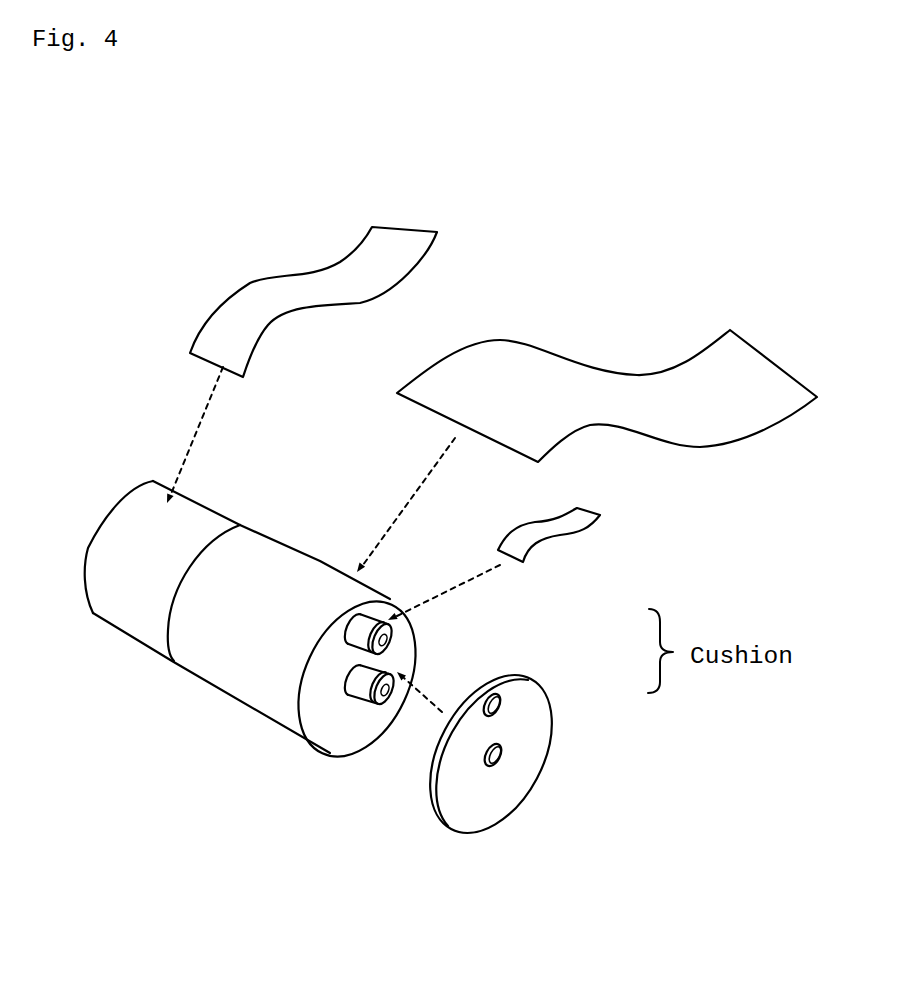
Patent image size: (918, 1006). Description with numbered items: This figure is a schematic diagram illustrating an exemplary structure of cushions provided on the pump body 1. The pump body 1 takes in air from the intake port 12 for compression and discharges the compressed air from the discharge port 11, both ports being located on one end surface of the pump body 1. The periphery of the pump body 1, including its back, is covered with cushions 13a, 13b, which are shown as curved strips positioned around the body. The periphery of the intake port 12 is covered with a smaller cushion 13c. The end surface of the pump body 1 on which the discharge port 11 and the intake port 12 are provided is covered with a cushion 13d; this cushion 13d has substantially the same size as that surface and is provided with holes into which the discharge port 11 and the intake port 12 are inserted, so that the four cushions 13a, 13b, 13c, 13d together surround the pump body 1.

The pump body 1 is at (203, 665).
The discharge port 11 is at (362, 687).
The intake port 12 is at (362, 628).
The cushion 13a is at (703, 362).
The cushion 13b is at (407, 230).
The cushion 13c is at (575, 532).
The cushion 13d is at (544, 698).